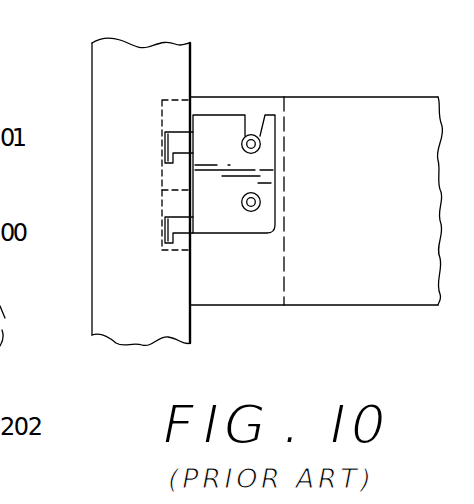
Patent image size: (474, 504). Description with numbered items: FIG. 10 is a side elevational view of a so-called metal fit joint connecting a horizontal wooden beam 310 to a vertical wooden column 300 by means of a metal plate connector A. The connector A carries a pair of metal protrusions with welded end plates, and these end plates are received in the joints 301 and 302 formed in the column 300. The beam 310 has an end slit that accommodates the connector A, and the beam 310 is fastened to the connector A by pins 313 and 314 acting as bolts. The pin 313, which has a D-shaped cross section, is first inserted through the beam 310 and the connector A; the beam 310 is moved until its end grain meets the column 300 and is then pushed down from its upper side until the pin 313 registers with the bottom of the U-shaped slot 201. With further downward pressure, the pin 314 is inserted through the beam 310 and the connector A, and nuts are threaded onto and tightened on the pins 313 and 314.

The U-shaped slot 201 is at (251, 134).
The column 300 is at (104, 193).
The joint 301 is at (173, 108).
The joint 302 is at (163, 207).
The beam 310 is at (405, 140).
The pin 313 is at (262, 149).
The pin 314 is at (247, 213).
The metal plate connector A is at (278, 215).